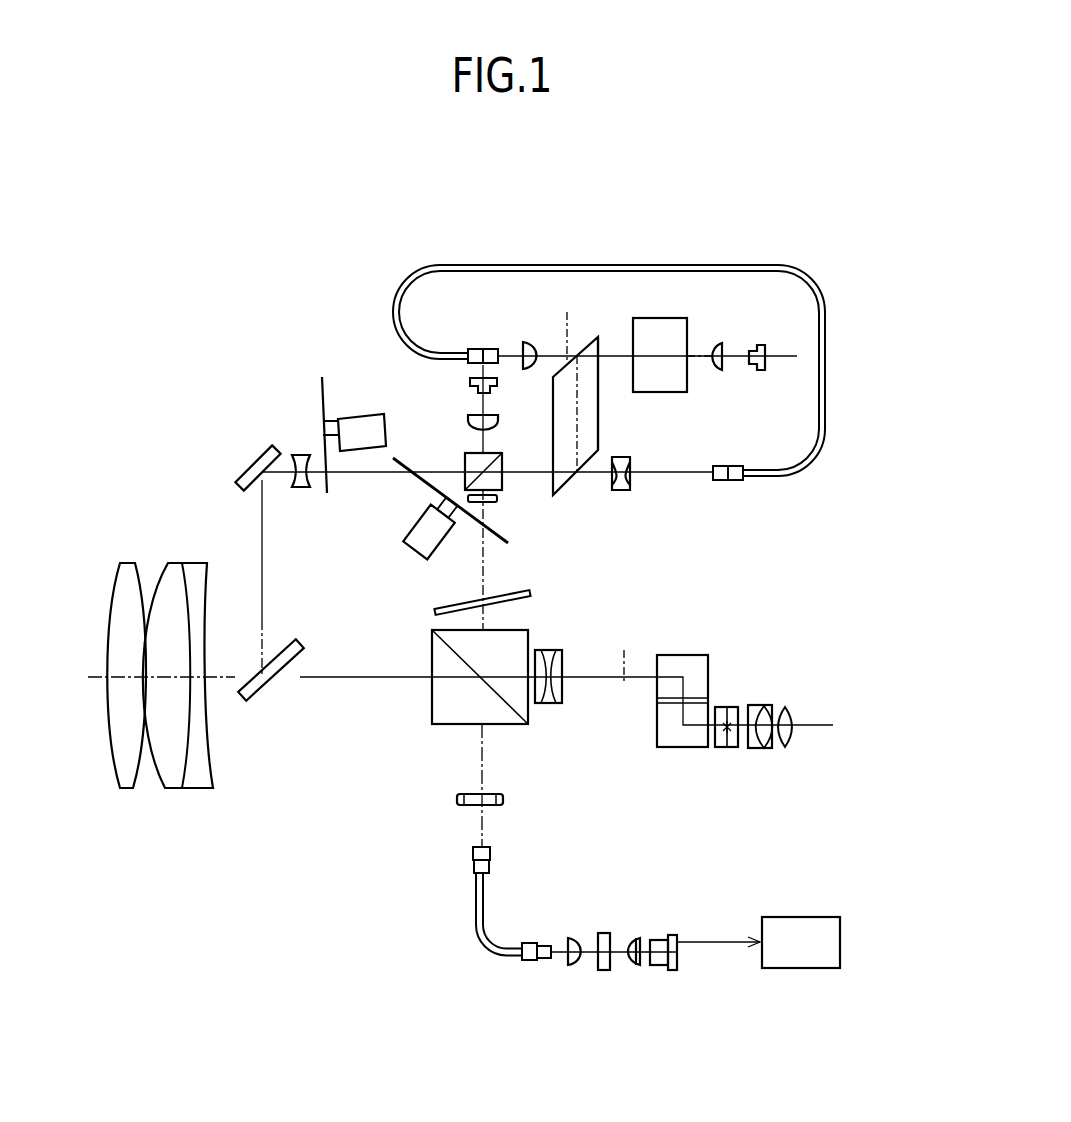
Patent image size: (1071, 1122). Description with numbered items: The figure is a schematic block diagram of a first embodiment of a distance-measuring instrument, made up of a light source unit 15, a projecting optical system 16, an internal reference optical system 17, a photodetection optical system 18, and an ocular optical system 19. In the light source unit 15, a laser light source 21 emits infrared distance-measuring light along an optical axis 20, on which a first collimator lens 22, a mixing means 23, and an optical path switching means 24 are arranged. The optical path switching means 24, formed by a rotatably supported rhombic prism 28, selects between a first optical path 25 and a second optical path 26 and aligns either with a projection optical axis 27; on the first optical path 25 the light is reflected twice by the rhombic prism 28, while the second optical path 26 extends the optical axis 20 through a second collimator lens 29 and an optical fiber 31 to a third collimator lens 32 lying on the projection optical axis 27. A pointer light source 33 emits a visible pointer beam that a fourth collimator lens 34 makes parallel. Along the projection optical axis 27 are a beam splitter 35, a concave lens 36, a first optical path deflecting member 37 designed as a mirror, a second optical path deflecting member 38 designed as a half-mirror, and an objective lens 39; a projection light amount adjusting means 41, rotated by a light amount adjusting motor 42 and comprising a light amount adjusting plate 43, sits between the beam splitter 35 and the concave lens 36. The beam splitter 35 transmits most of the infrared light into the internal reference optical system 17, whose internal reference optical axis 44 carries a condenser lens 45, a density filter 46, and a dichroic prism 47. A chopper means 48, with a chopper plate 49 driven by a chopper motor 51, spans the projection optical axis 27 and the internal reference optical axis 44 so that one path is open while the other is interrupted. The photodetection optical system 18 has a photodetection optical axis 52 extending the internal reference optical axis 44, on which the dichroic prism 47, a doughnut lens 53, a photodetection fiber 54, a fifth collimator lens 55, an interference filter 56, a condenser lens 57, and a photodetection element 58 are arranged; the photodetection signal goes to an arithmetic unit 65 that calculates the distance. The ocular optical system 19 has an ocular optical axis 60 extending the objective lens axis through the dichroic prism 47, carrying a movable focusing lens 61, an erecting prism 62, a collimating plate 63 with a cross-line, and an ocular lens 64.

The light source unit 15 is at (840, 368).
The projecting optical system 16 is at (265, 776).
The internal reference optical system 17 is at (552, 612).
The photodetection optical system 18 is at (455, 928).
The ocular optical system 19 is at (687, 777).
The optical axis 20 is at (702, 353).
The laser light source 21 is at (763, 343).
The first collimator lens 22 is at (717, 342).
The mixing means 23 is at (647, 318).
The optical path switching means 24 is at (552, 423).
The first optical path 25 is at (577, 405).
The second optical path 26 is at (561, 322).
The projection optical axis 27 is at (93, 673).
The rhombic prism 28 is at (600, 337).
The second collimator lens 29 is at (523, 345).
The optical fiber 31 is at (478, 264).
The third collimator lens 32 is at (633, 478).
The pointer light source 33 is at (477, 377).
The fourth collimator lens 34 is at (475, 413).
The beam splitter 35 is at (492, 454).
The concave lens 36 is at (295, 452).
The first optical path deflecting member 37 is at (236, 466).
The second optical path deflecting member 38 is at (267, 683).
The objective lens 39 is at (152, 797).
The projection light amount adjusting means 41 is at (341, 405).
The light amount adjusting motor 42 is at (358, 454).
The light amount adjusting plate 43 is at (322, 402).
The internal reference optical axis 44 is at (478, 583).
The condenser lens 45 is at (497, 505).
The density filter 46 is at (435, 610).
The dichroic prism 47 is at (433, 695).
The chopper means 48 is at (452, 539).
The chopper plate 49 is at (423, 480).
The chopper motor 51 is at (420, 552).
The photodetection optical axis 52 is at (490, 745).
The doughnut lens 53 is at (456, 798).
The photodetection fiber 54 is at (473, 910).
The fifth collimator lens 55 is at (573, 938).
The interference filter 56 is at (602, 972).
The condenser lens 57 is at (632, 938).
The photodetection element 58 is at (657, 968).
The ocular optical axis 60 is at (624, 650).
The focusing lens 61 is at (550, 705).
The erecting prism 62 is at (710, 672).
The collimating plate 63 is at (730, 748).
The ocular lens 64 is at (763, 710).
The arithmetic unit 65 is at (803, 968).